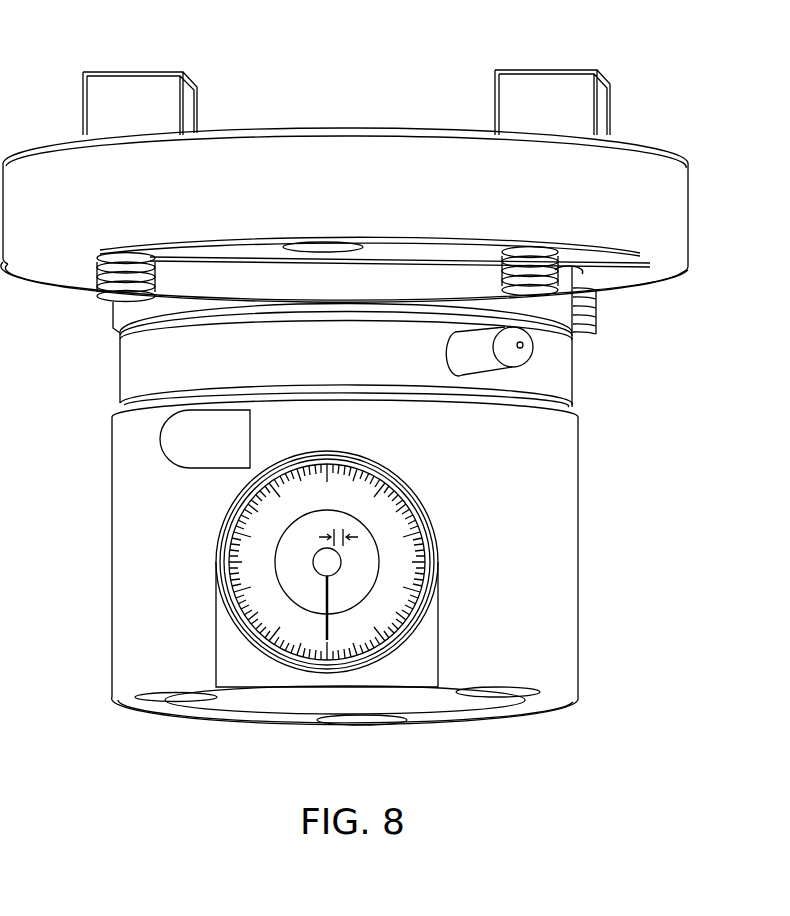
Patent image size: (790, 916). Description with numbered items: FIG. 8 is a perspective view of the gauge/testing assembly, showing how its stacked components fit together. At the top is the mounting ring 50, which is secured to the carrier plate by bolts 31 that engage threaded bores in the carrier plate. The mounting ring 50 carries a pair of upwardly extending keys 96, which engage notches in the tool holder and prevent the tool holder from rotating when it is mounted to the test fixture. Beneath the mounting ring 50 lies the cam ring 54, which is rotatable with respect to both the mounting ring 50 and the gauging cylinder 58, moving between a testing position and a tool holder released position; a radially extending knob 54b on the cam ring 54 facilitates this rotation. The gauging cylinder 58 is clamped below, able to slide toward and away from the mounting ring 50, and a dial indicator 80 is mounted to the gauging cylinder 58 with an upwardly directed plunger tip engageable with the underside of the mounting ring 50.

The keys 96 is at (138, 86).
The mounting ring 50 is at (676, 214).
The bolts 31 is at (155, 277).
The cam ring 54 is at (132, 373).
The knob 54b is at (525, 345).
The gauging cylinder 58 is at (596, 562).
The dial indicator 80 is at (400, 598).